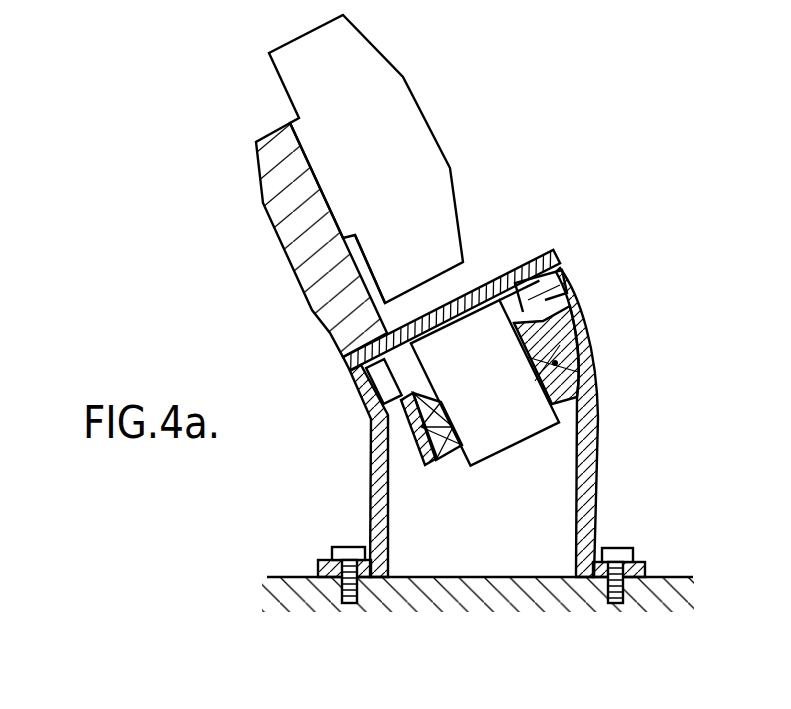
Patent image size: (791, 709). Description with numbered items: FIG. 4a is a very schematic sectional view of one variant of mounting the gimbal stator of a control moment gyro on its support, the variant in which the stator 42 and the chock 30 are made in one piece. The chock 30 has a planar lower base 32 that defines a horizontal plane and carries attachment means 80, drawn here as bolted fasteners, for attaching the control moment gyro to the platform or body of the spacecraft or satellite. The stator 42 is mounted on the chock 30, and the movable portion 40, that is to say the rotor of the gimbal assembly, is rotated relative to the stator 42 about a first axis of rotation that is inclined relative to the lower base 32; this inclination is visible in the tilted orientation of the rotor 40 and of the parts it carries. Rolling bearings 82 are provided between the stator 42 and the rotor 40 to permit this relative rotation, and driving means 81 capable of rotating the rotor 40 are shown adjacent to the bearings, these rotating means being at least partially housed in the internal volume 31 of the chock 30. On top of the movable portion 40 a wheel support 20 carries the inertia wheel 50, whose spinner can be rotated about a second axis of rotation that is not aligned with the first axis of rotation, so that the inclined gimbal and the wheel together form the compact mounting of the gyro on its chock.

The wheel support 20 is at (298, 213).
The chock 30 is at (588, 465).
The internal volume 31 is at (425, 512).
The lower base 32 is at (293, 577).
The movable portion 40 is at (518, 320).
The stator 42 is at (367, 393).
The inertia wheel 50 is at (357, 127).
The attachment means 80 is at (635, 558).
The driving means 81 is at (530, 302).
The rolling bearings 82 is at (556, 364).